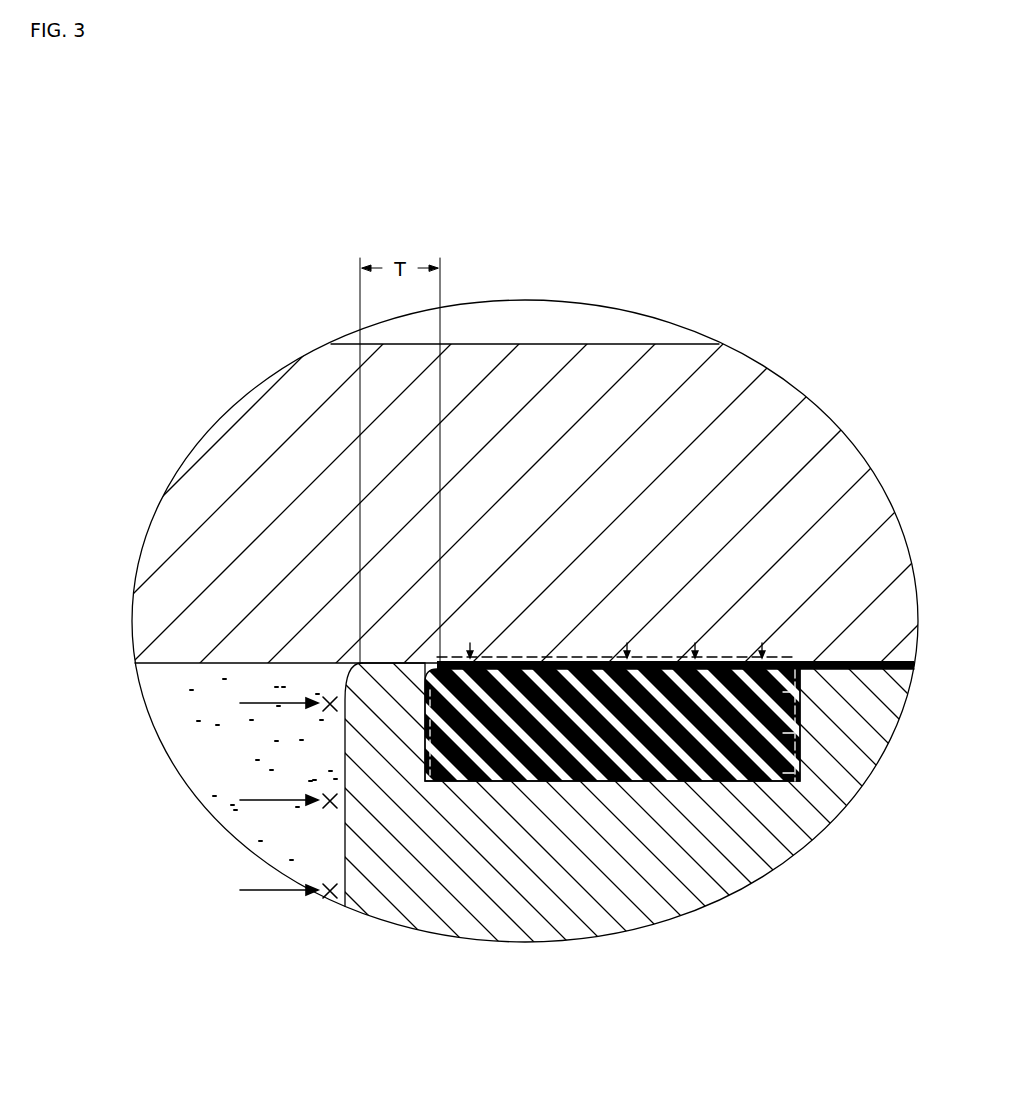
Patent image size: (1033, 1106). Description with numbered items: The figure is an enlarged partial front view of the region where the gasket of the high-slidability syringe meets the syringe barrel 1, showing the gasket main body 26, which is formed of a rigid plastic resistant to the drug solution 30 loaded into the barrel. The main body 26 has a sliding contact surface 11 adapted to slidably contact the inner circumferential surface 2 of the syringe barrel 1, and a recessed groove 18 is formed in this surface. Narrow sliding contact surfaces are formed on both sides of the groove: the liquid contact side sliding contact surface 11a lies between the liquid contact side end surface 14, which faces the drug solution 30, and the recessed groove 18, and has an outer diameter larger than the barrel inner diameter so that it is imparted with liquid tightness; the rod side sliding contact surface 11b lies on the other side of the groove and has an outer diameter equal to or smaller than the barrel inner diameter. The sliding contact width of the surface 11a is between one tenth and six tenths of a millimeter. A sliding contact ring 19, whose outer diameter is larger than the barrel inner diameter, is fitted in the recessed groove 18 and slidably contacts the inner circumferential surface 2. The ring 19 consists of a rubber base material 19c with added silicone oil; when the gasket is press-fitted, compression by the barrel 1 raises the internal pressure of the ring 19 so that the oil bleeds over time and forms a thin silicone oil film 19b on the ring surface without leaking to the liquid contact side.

The syringe barrel 1 is at (716, 424).
The sliding contact surface 11 is at (516, 647).
The liquid contact side sliding contact surface 11a is at (403, 663).
The rod side sliding contact surface 11b is at (858, 677).
The inner circumferential surface 2 is at (183, 667).
The drug solution 30 is at (207, 743).
The liquid contact side end surface 14 is at (346, 828).
The gasket main body 26 is at (445, 895).
The recessed groove 18 is at (603, 782).
The sliding contact ring 19 is at (556, 788).
The silicone oil film 19b is at (725, 657).
The rubber base material 19c is at (672, 782).